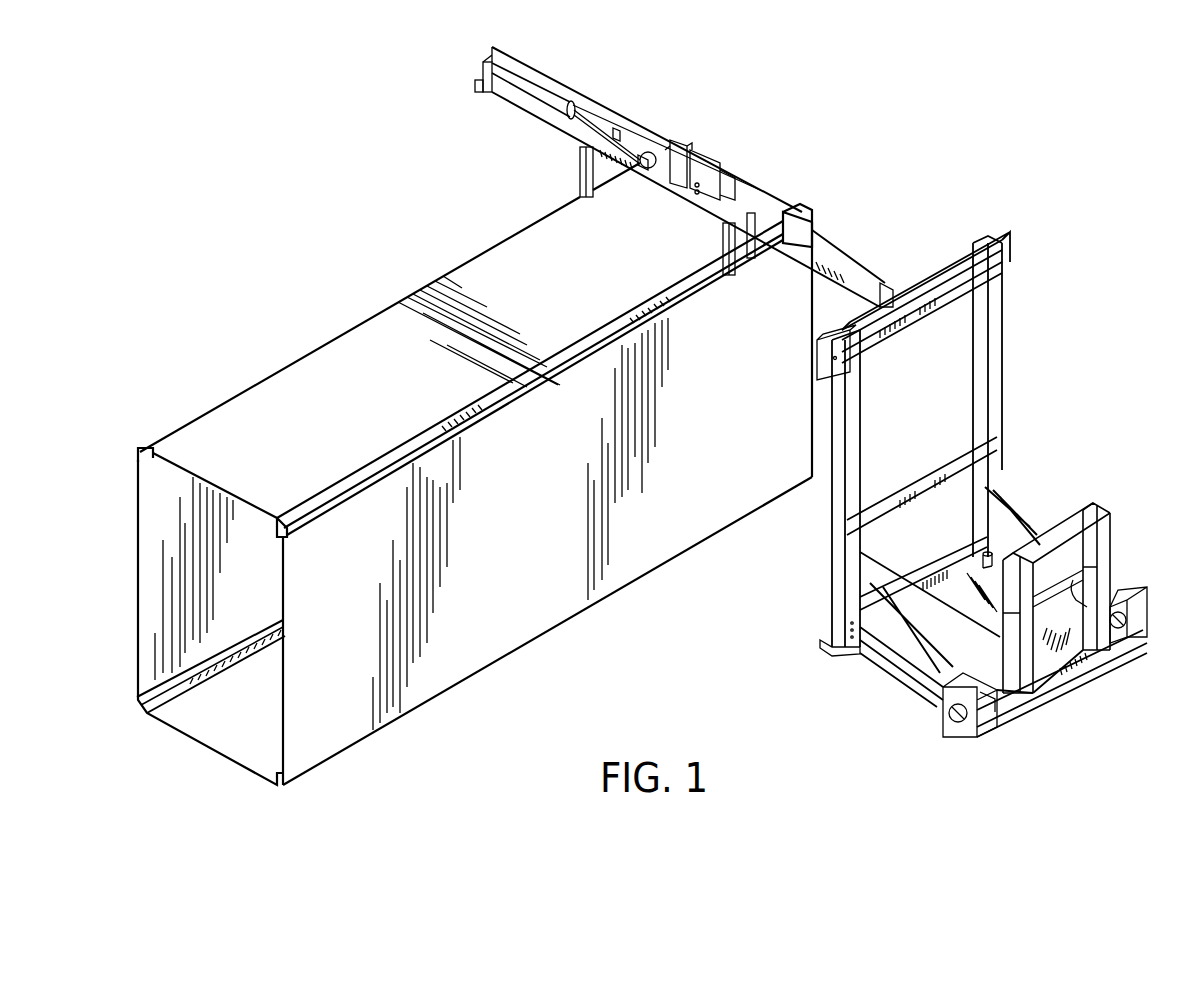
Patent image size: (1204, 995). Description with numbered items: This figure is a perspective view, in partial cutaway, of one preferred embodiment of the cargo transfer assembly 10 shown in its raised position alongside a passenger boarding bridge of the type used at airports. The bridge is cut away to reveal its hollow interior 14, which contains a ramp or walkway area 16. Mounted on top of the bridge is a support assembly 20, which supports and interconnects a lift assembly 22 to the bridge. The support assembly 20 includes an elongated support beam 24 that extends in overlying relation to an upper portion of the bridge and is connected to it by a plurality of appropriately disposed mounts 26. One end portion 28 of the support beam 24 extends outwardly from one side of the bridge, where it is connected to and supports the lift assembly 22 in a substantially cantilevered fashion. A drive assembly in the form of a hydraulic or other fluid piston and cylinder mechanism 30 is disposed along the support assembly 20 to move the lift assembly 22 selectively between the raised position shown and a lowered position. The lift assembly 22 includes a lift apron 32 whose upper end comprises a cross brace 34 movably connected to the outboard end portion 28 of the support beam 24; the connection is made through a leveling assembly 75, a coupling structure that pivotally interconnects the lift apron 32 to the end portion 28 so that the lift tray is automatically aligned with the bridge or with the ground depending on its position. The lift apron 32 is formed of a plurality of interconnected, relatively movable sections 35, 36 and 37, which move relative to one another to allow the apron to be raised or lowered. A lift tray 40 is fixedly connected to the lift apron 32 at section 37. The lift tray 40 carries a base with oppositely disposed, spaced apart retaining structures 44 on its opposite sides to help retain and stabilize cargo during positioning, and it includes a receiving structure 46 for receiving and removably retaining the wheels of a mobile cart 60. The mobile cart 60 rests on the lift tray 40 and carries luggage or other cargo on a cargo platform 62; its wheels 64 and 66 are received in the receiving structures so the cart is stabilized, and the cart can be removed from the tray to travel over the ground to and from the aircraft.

The transfer assembly 10 is at (925, 117).
The hollow interior 14 is at (237, 597).
The ramp or walkway area 16 is at (229, 717).
The support assembly 20 is at (745, 160).
The lift assembly 22 is at (1020, 302).
The support beam 24 is at (697, 215).
The mounts 26 is at (573, 168).
The outboard end portion 28 is at (838, 272).
The piston and cylinder mechanism 30 is at (572, 100).
The lift apron 32 is at (822, 533).
The cross brace 34 is at (827, 363).
The lift apron section 35 is at (1010, 279).
The lift apron section 36 is at (1010, 279).
The lift apron section 37 is at (1010, 279).
The lift tray 40 is at (893, 685).
The retaining structures 44 is at (1000, 507).
The receiving structure 46 is at (1133, 600).
The mobile cart 60 is at (1116, 505).
The cargo platform 62 is at (956, 629).
The wheel 64 is at (978, 555).
The wheel 66 is at (955, 735).
The leveling assembly 75 is at (908, 272).